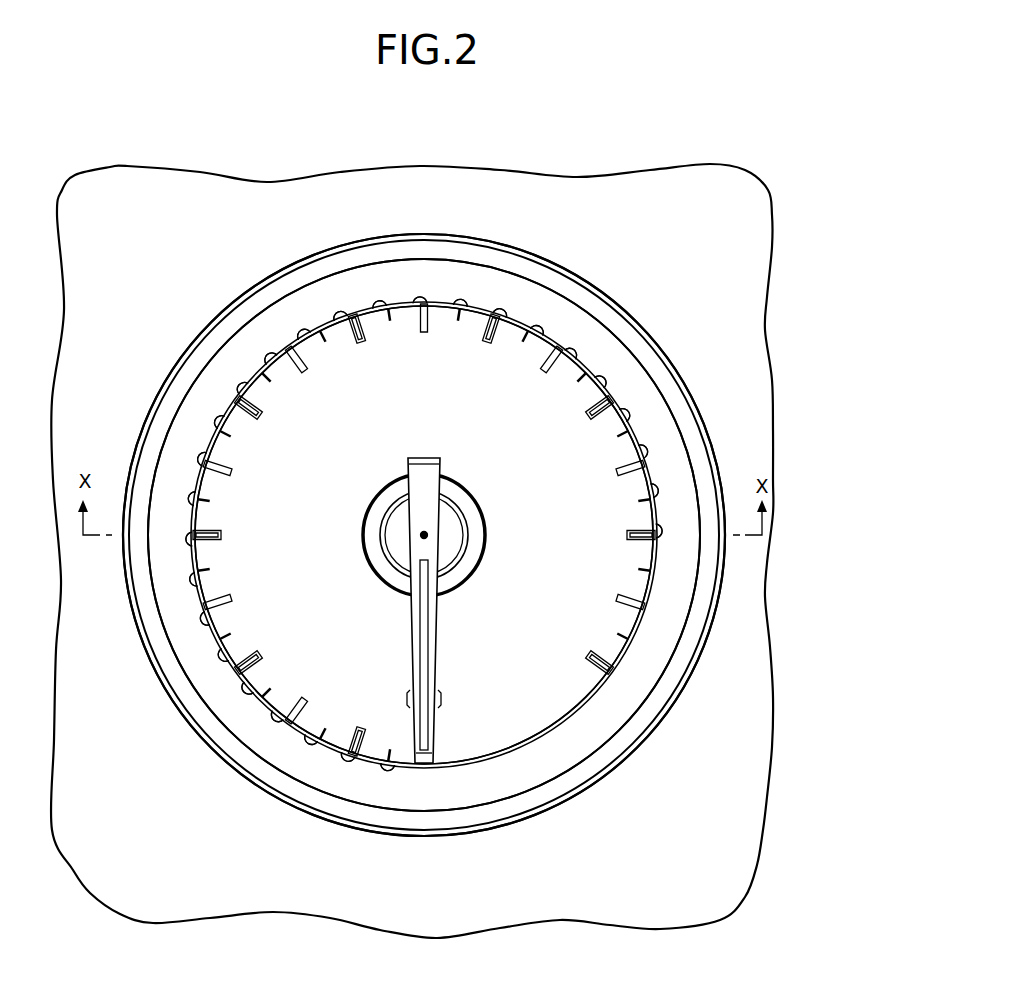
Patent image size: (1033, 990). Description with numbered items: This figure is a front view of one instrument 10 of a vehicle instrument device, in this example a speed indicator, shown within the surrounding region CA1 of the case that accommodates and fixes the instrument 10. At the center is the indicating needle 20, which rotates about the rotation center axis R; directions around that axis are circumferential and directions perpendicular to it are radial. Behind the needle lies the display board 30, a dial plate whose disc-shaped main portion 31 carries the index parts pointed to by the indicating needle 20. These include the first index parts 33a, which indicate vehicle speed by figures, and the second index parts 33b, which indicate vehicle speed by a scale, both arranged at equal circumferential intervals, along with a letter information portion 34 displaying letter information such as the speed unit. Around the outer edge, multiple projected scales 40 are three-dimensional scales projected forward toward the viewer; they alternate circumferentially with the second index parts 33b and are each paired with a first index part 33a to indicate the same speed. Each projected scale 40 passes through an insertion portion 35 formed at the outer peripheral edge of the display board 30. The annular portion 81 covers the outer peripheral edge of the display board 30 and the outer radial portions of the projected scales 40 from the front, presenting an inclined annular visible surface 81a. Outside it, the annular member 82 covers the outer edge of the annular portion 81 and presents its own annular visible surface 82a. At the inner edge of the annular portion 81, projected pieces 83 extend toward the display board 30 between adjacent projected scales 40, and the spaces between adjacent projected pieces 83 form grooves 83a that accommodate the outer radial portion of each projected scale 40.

The vehicle cabin/frame CA1 is at (701, 186).
The instrument 10 is at (634, 230).
The indicating needle 20 is at (444, 682).
The display board 30 is at (635, 330).
The main portion 31 is at (350, 433).
The first index part 33a is at (569, 367).
The second index part 33b is at (521, 355).
The letter information portion 34 is at (478, 438).
The insertion portion 35 is at (229, 403).
The projected scale 40 is at (227, 417).
The annular portion 81 is at (685, 572).
The annular visible surface 81a is at (668, 596).
The annular member 82 is at (603, 789).
The annular visible surface 82a is at (556, 790).
The projected piece 83 is at (400, 305).
The groove 83a is at (445, 303).
The rotation center axis R is at (428, 540).